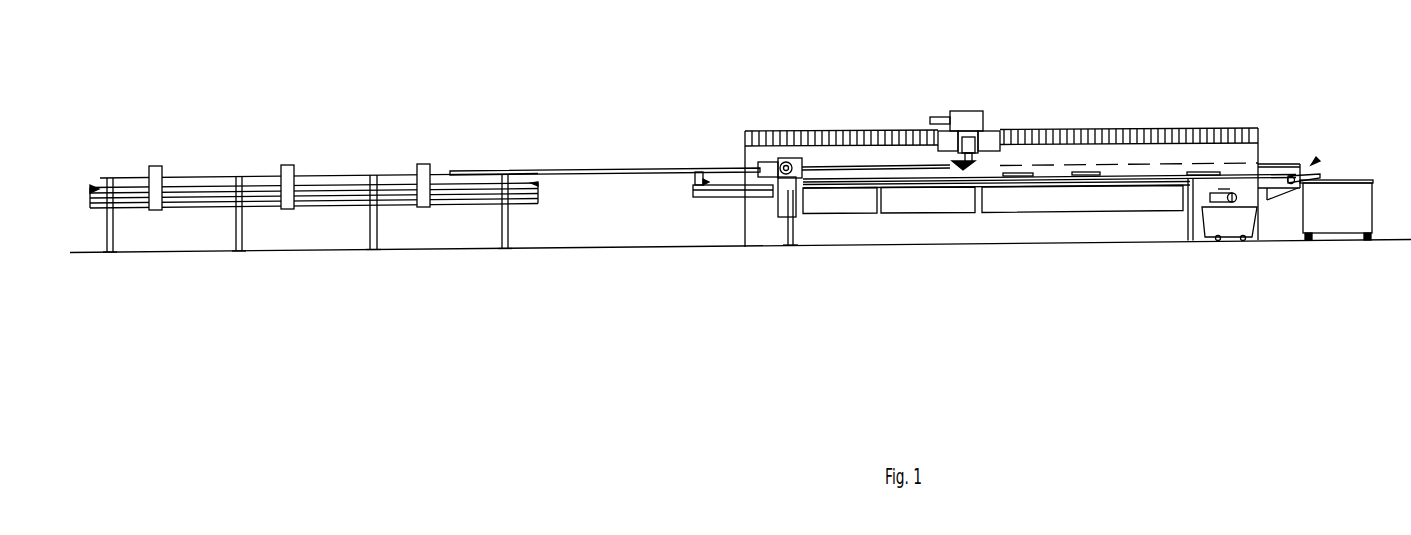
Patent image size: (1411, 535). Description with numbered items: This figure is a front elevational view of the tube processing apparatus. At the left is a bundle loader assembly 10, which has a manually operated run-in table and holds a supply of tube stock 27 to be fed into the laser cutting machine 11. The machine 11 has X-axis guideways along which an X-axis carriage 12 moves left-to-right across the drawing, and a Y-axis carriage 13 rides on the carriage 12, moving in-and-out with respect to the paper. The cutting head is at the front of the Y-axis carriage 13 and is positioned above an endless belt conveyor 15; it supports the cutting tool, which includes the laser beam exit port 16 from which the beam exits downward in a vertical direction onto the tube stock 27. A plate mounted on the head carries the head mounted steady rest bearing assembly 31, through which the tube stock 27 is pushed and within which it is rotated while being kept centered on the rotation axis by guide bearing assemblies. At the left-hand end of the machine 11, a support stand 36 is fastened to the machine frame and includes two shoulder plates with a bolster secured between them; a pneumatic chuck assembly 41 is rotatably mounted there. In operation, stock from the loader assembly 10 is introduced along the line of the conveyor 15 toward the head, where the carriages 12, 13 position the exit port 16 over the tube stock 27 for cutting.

The bundle loader assembly 10 is at (314, 159).
The laser cutting machine 11 is at (1001, 130).
The X-axis carriage 12 is at (988, 140).
The Y-axis carriage 13 is at (962, 121).
The endless belt conveyor 15 is at (1157, 176).
The laser beam exit port 16 is at (987, 168).
The tube stock 27 is at (596, 168).
The head mounted steady rest bearing assembly 31 is at (993, 260).
The support stand 36 is at (697, 277).
The pneumatic chuck assembly 41 is at (802, 183).